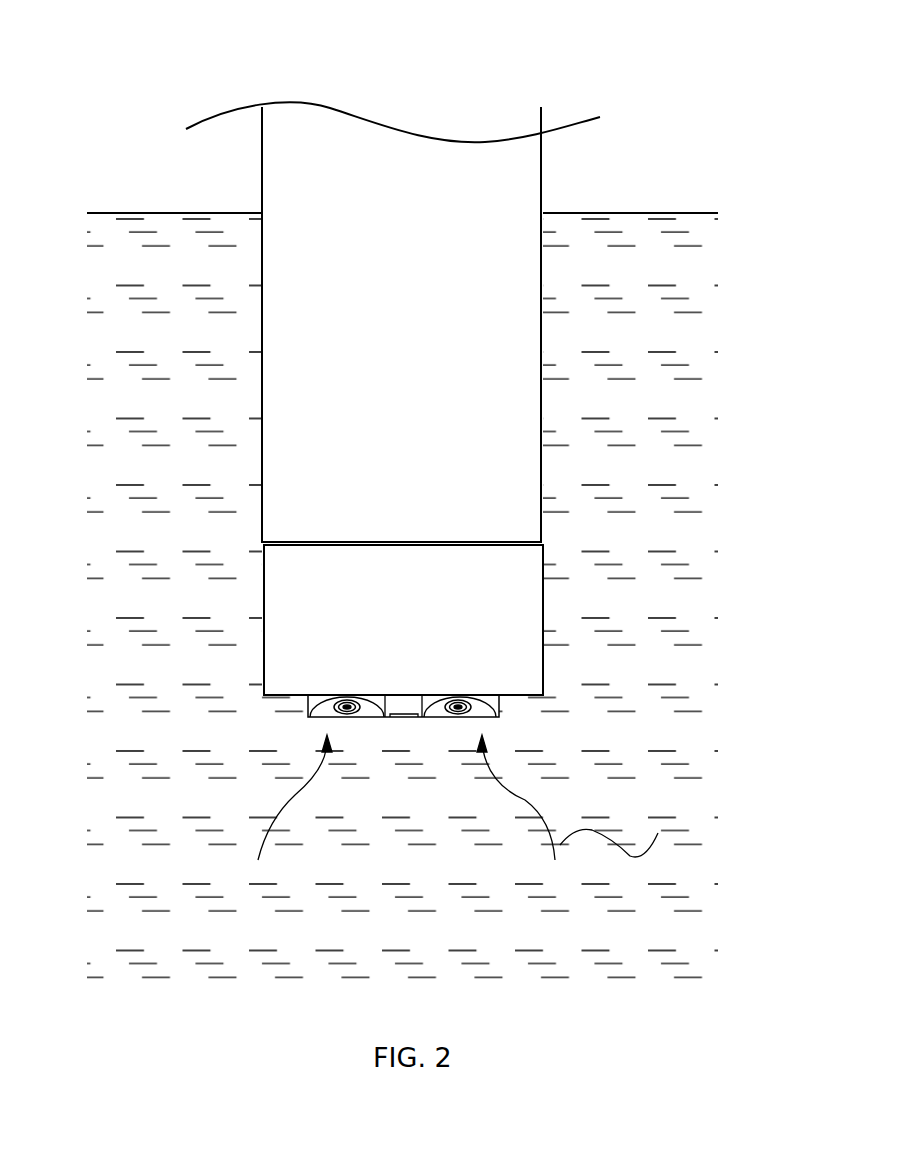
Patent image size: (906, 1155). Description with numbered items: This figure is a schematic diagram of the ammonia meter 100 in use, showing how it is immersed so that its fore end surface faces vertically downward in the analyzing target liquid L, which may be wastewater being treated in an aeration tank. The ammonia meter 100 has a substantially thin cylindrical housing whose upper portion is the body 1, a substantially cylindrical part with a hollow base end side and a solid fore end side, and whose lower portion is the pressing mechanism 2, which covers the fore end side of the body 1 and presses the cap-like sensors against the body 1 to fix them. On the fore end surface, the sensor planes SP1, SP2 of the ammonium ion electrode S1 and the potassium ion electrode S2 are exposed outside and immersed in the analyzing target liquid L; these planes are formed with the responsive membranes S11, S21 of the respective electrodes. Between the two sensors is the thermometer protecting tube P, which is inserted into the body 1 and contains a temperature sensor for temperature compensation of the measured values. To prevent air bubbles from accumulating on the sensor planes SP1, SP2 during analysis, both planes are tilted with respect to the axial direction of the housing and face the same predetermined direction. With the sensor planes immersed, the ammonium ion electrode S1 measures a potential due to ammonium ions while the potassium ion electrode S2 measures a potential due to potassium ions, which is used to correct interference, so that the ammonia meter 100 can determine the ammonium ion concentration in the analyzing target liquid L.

The ammonia meter 100 is at (401, 413).
The body 1 is at (543, 386).
The pressing mechanism 2 is at (264, 613).
The sensor plane SP1 is at (318, 701).
The sensor plane SP2 is at (504, 699).
The responsive membrane S11 is at (347, 704).
The responsive membrane S21 is at (458, 704).
The thermometer protecting tube P is at (405, 718).
The ammonium ion electrode S1 is at (288, 808).
The potassium ion electrode S2 is at (521, 808).
The analyzing target liquid L is at (612, 838).